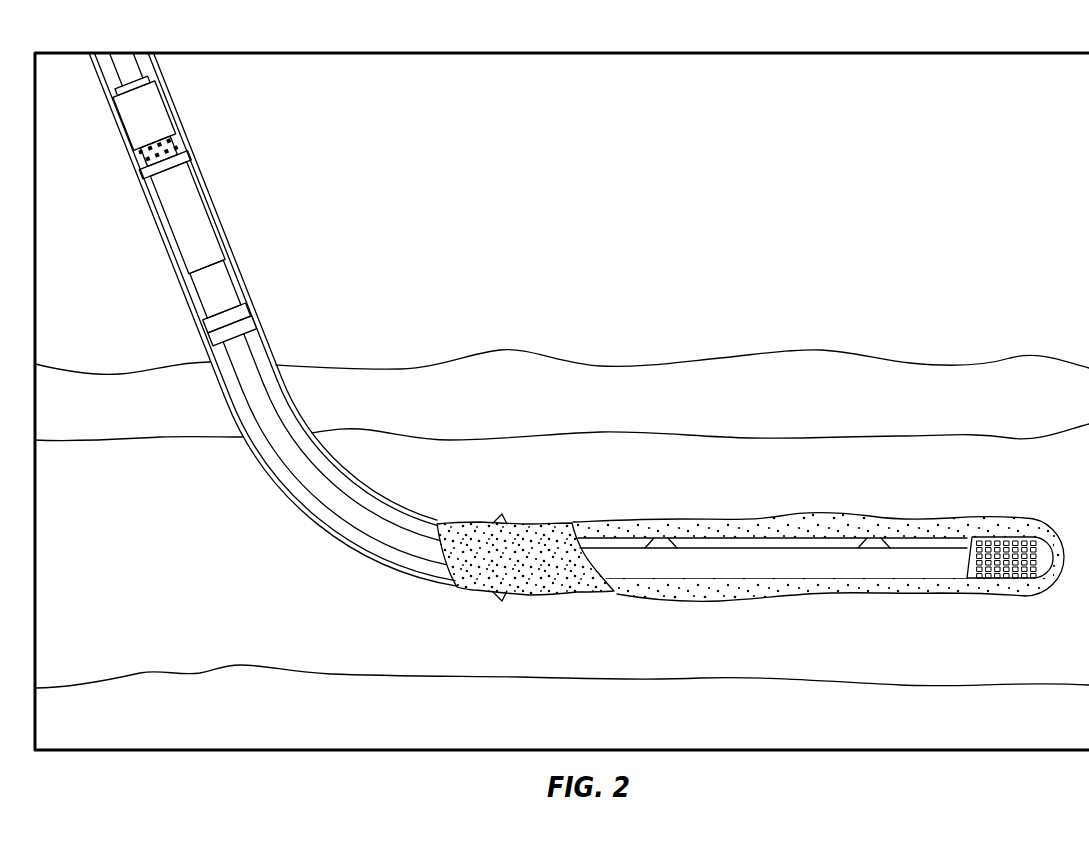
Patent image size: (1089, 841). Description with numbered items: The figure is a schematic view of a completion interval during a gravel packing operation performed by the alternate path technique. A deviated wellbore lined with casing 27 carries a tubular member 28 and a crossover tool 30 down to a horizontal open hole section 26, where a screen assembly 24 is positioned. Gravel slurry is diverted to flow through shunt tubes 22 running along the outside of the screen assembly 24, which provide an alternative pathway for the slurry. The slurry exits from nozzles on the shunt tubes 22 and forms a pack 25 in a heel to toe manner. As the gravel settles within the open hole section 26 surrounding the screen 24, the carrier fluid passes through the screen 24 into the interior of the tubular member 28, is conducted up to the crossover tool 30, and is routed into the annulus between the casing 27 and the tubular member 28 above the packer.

The shunt tubes 22 is at (366, 546).
The screen assembly 24 is at (1000, 566).
The pack 25 is at (557, 580).
The open hole section 26 is at (690, 492).
The casing 27 is at (381, 499).
The tubular member 28 is at (284, 419).
The crossover tool 30 is at (197, 220).